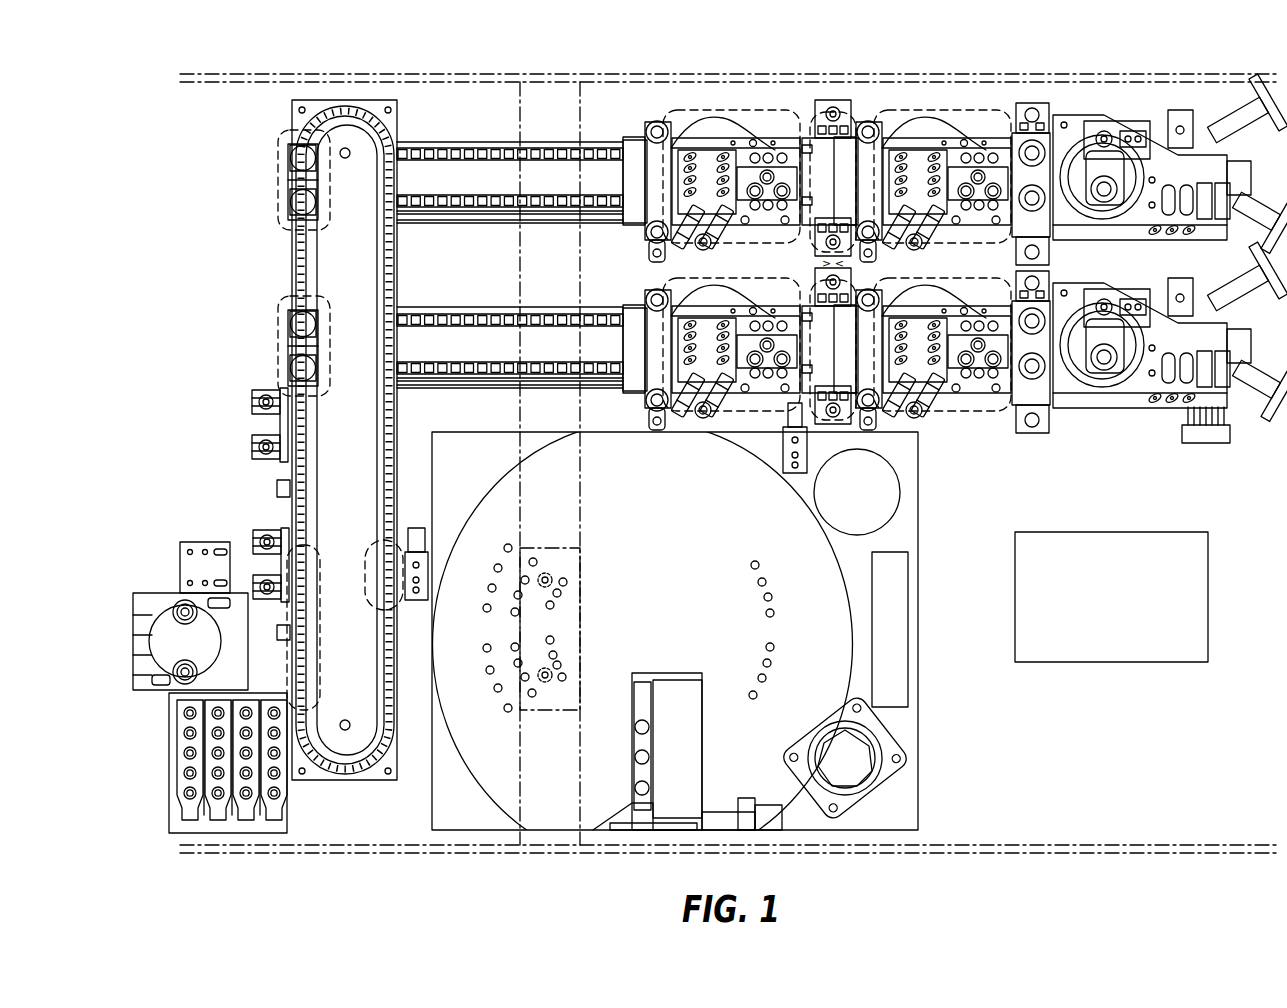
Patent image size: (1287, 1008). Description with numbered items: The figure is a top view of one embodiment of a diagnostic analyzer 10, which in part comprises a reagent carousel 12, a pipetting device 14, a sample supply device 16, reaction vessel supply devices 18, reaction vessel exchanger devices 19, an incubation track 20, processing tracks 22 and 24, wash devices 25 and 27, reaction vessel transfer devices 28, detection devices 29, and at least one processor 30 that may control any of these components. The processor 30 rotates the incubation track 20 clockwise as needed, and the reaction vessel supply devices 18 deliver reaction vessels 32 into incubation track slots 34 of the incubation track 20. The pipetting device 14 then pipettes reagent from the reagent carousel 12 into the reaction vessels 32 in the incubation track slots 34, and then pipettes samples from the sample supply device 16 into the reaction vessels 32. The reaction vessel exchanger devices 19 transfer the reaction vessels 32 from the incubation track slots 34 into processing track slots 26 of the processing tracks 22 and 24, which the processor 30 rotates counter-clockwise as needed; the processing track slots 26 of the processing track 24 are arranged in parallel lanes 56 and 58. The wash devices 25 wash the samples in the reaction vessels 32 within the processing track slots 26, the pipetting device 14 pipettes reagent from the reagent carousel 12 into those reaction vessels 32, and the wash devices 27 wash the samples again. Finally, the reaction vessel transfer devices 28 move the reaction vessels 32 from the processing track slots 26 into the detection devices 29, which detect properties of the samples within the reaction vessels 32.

The diagnostic analyzer 10 is at (843, 53).
The reagent carousel 12 is at (835, 600).
The pipetting device 14 is at (595, 580).
The sample supply device 16 is at (185, 715).
The reaction vessel supply devices 18 is at (255, 447).
The reaction vessel exchanger devices 19 is at (290, 203).
The incubation track 20 is at (364, 100).
The processing track 22 is at (522, 340).
The processing track 24 is at (522, 120).
The wash devices 25 is at (686, 112).
The processing track slots 26 is at (432, 195).
The wash devices 27 is at (978, 112).
The reaction vessel transfer devices 28 is at (1149, 244).
The detection devices 29 is at (1127, 138).
The processor 30 is at (1128, 532).
The reaction vessels 32 is at (428, 380).
The incubation track slots 34 is at (297, 447).
The lane 56 is at (500, 148).
The lane 58 is at (527, 195).